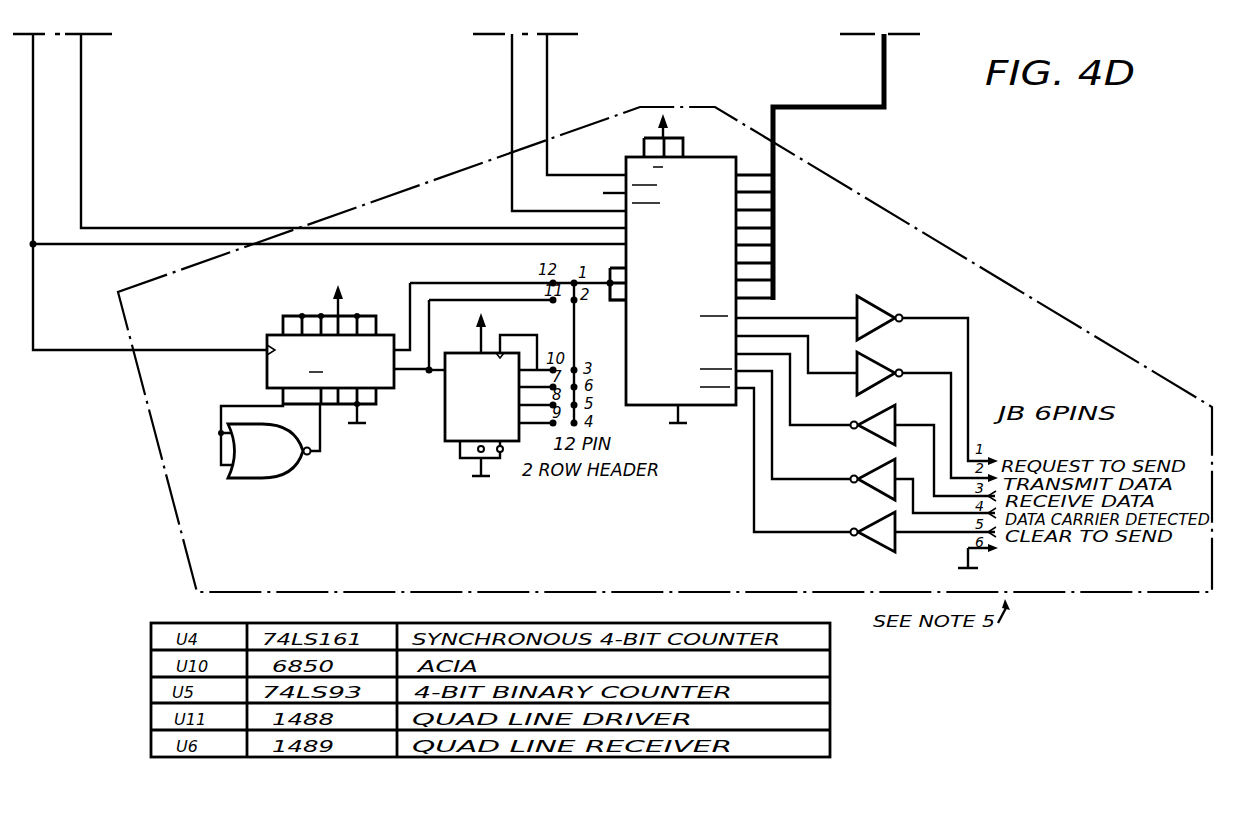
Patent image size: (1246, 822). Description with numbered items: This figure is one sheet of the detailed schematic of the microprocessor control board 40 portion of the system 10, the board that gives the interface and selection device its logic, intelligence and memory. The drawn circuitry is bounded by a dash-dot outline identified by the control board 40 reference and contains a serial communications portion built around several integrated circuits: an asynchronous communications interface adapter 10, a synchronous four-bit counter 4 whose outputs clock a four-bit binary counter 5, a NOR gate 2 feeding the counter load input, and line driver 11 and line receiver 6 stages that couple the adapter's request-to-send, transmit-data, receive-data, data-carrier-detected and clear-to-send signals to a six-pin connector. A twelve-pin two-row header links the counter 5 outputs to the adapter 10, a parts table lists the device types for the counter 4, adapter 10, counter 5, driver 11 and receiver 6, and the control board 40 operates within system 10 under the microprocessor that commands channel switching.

The microprocessor control board 40 is at (1054, 613).
The U2 NOR gate 2 is at (265, 441).
The U4 74LS161 synchronous 4-bit counter 4 is at (340, 345).
The U5 74LS93 4-bit binary counter 5 is at (490, 387).
The U6 1489 quad line receiver 6 is at (914, 477).
The system 10 is at (688, 266).
The U11 1488 quad line driver 11 is at (907, 387).